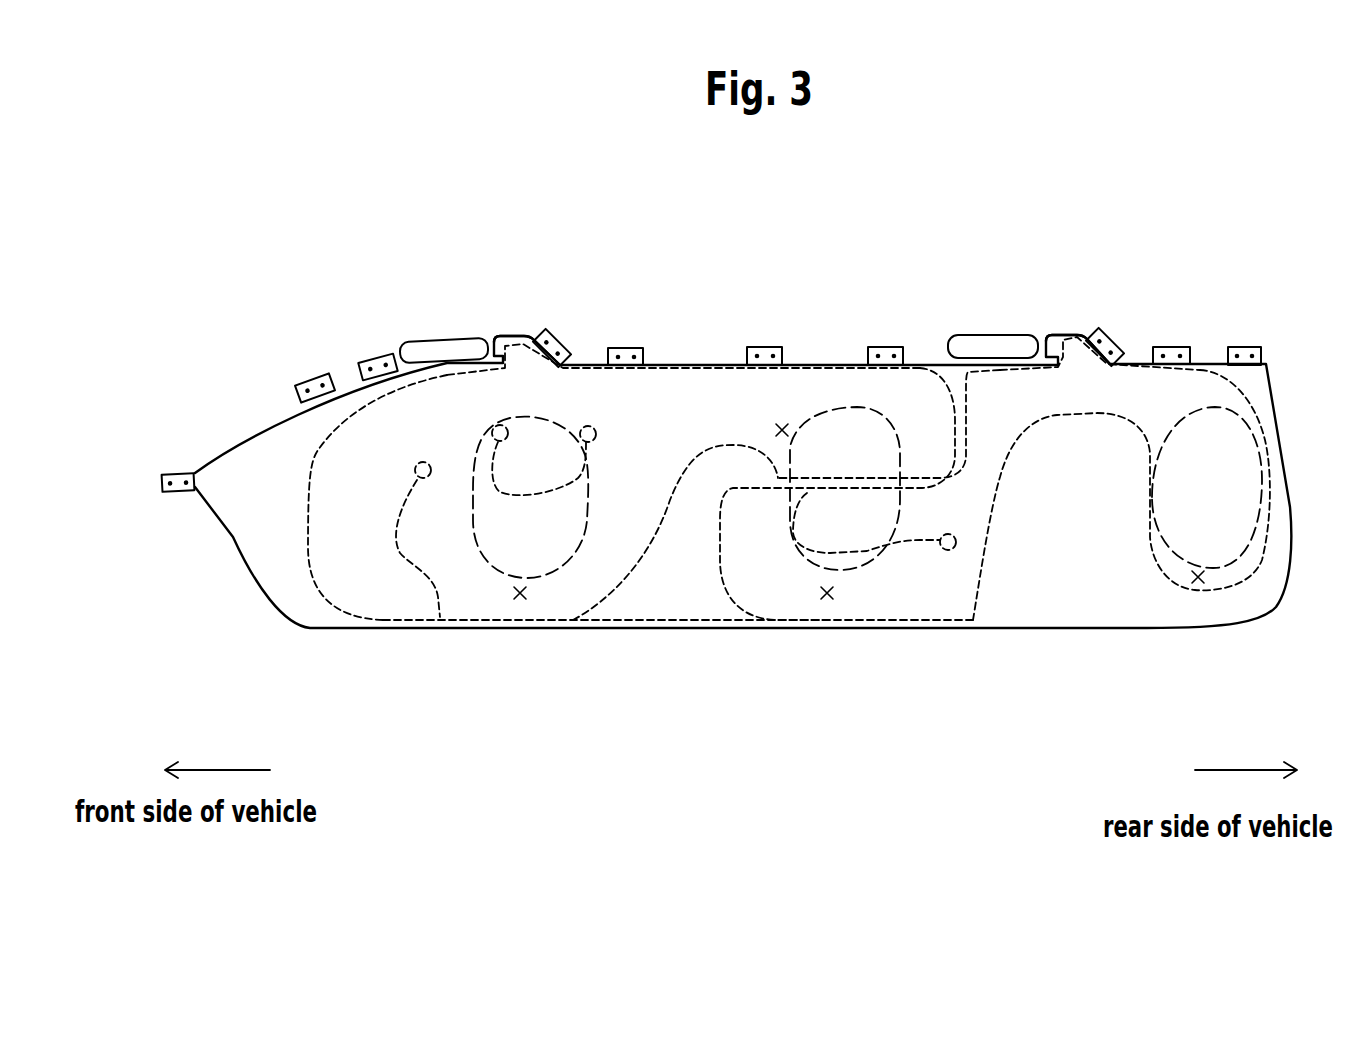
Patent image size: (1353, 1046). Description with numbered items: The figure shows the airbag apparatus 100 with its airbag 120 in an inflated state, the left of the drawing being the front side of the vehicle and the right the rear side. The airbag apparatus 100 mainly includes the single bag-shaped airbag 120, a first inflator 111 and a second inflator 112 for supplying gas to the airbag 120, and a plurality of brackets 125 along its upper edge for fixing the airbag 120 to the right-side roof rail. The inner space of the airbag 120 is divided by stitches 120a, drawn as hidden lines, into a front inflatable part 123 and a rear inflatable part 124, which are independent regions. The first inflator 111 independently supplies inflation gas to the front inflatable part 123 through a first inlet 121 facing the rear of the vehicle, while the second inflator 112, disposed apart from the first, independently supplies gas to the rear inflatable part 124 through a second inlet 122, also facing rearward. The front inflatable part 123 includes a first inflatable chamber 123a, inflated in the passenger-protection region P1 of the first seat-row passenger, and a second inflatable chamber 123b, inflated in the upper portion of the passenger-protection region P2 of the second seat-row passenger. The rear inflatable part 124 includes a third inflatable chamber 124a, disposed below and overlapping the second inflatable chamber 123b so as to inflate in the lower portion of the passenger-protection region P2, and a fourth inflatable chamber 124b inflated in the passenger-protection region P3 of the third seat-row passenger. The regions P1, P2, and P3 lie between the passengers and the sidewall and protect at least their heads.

The airbag apparatus 100 is at (739, 297).
The first inflator 111 is at (447, 350).
The second inflator 112 is at (1008, 350).
The airbag 120 is at (668, 352).
The stitches 120a is at (305, 550).
The first inlet 121 is at (507, 336).
The second inlet 122 is at (1065, 333).
The front inflatable part 123 is at (387, 622).
The first inflatable chamber 123a is at (519, 600).
The second inflatable chamber 123b is at (782, 437).
The rear inflatable part 124 is at (968, 618).
The third inflatable chamber 124a is at (827, 598).
The fourth inflatable chamber 124b is at (1197, 585).
The brackets 125 is at (170, 473).
The passenger-protection region P1 is at (552, 563).
The passenger-protection region P2 is at (855, 555).
The passenger-protection region P3 is at (1227, 553).